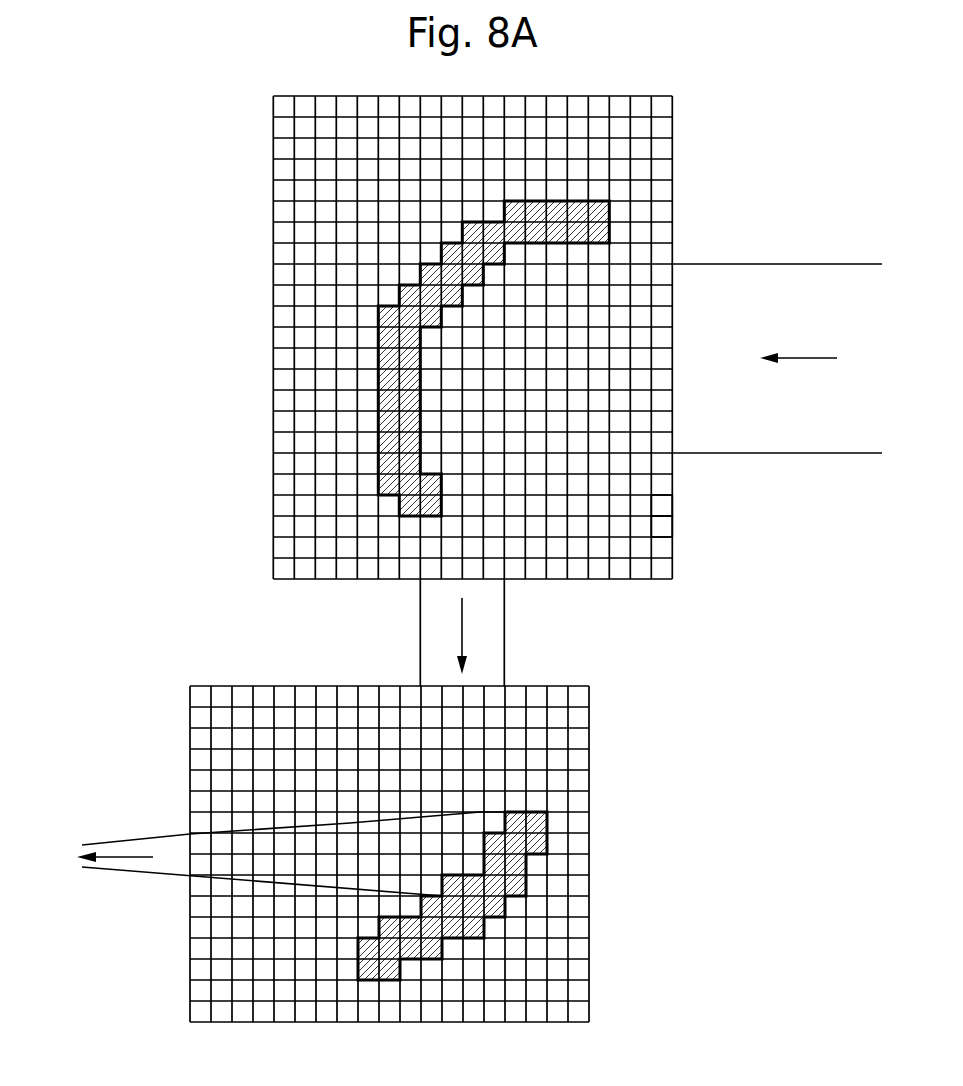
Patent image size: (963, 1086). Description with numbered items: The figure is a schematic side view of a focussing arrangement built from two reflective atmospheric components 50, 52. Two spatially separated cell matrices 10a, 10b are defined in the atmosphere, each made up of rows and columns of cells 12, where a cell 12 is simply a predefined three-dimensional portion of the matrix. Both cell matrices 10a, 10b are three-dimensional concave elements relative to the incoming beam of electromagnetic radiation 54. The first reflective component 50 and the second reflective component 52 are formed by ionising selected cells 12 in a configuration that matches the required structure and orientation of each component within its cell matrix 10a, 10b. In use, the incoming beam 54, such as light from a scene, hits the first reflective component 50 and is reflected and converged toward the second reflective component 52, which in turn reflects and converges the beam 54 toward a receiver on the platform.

The cell matrix 10a is at (272, 478).
The cell matrix 10b is at (590, 752).
The cell 12 is at (665, 506).
The first reflective component 50 is at (603, 210).
The second reflective component 52 is at (538, 818).
The incoming beam of electromagnetic radiation 54 is at (805, 263).